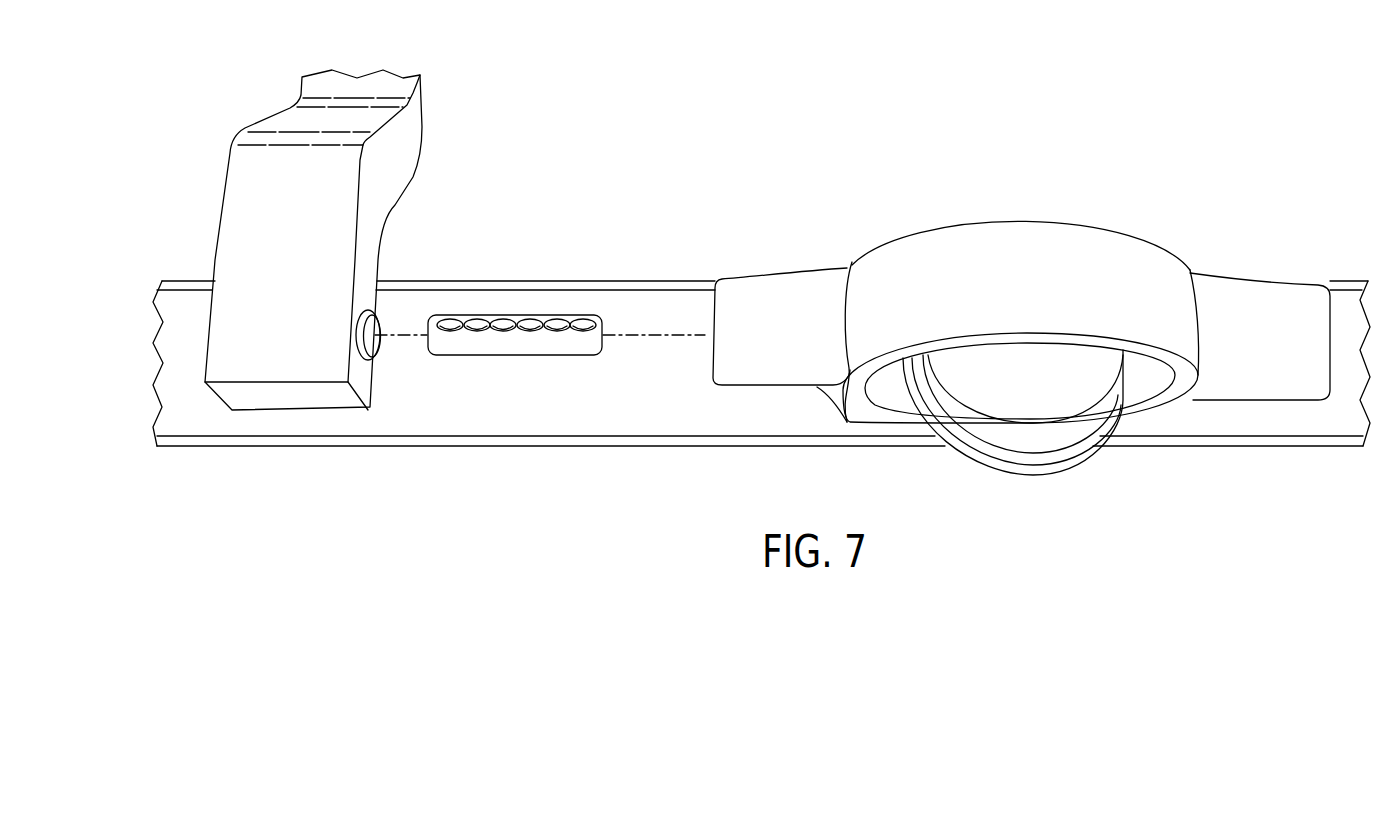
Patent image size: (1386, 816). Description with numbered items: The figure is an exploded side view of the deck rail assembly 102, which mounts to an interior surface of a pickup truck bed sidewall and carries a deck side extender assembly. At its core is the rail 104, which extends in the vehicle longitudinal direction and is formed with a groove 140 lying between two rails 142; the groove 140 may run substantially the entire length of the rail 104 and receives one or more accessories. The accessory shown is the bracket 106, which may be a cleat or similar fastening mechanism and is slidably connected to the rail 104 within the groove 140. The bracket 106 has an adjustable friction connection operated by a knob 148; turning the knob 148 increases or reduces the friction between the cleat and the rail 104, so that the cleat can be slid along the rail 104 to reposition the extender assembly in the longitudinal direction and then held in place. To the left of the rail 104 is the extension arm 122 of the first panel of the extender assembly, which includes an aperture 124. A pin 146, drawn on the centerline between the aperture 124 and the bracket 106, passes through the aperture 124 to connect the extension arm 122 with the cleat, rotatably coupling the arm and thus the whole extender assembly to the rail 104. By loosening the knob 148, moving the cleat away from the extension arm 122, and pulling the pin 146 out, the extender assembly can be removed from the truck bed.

The deck rail assembly 102 is at (1021, 241).
The rail 104 is at (540, 218).
The bracket 106 is at (1152, 248).
The extension arm 122 is at (230, 189).
The aperture 124 is at (372, 347).
The groove 140 is at (761, 397).
The rails 142 is at (478, 283).
The pin 146 is at (522, 355).
The knob 148 is at (1037, 457).